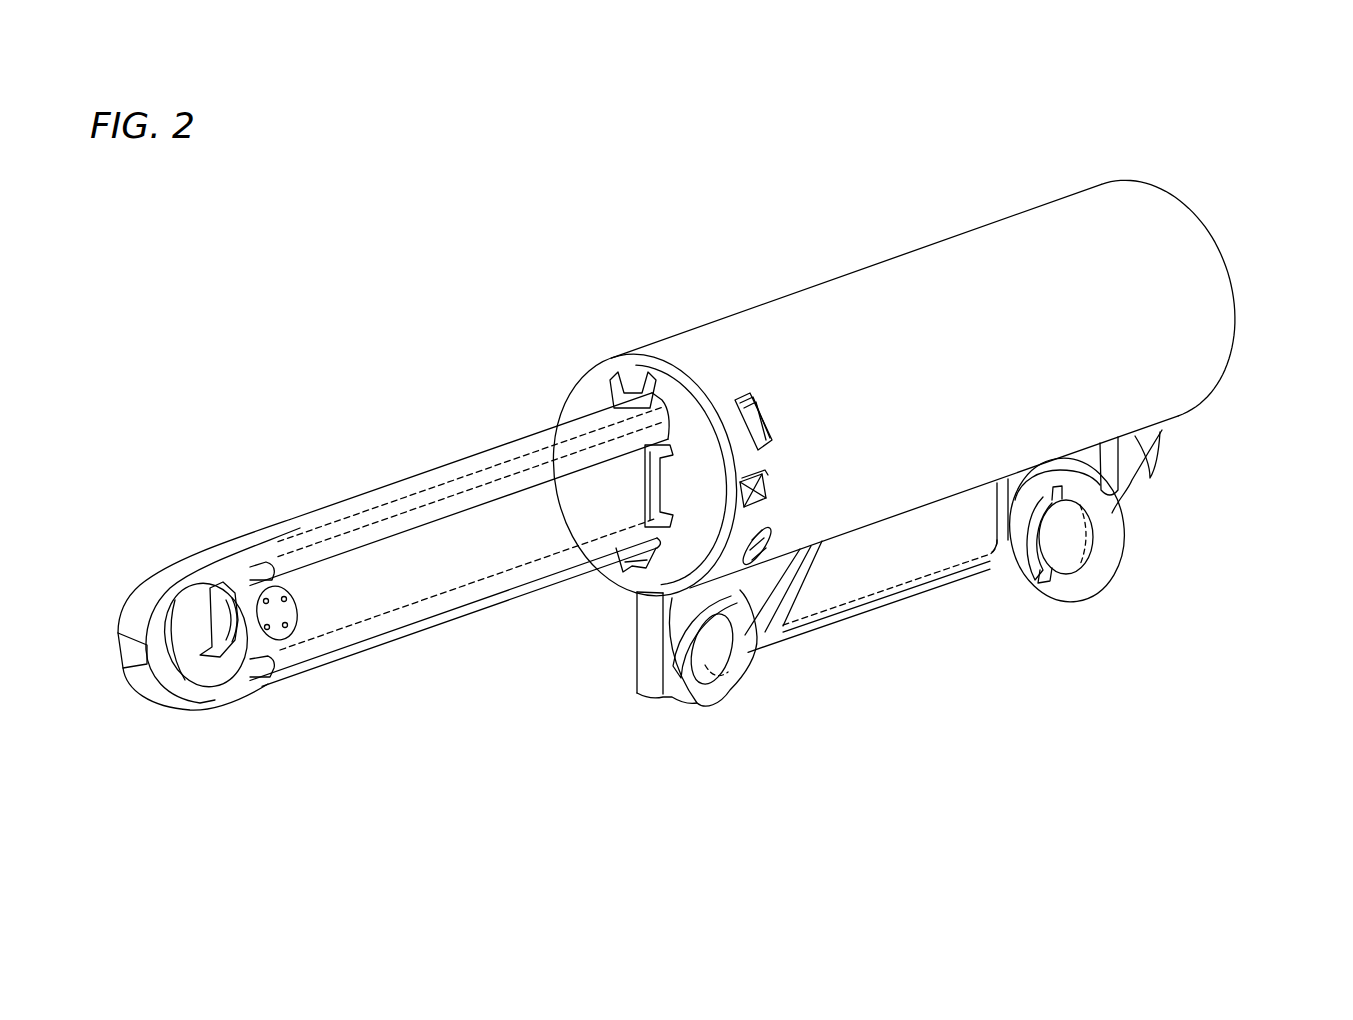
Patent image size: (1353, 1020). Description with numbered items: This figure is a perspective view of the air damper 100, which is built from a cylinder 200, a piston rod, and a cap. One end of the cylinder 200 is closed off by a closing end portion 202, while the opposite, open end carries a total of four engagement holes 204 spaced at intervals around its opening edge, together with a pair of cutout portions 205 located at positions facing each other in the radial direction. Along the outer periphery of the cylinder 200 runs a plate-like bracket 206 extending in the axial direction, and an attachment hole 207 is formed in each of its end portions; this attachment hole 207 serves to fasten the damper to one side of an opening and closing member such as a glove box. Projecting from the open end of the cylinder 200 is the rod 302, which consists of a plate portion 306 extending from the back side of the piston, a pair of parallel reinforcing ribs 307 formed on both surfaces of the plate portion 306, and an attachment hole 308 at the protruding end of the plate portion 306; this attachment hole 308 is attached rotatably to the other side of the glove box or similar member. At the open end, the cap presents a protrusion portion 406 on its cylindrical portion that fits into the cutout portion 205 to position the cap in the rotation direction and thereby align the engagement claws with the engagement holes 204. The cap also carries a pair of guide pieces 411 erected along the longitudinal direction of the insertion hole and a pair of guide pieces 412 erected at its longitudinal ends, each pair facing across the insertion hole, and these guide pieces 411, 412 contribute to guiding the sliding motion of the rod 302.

The air damper 100 is at (686, 206).
The cylinder 200 is at (923, 393).
The closing end portion 202 is at (1200, 282).
The engagement hole 204 is at (769, 407).
The cutout portion 205 is at (762, 471).
The bracket 206 is at (903, 598).
The attachment hole 207 is at (718, 662).
The rod 302 is at (399, 466).
The plate portion 306 is at (418, 580).
The reinforcing rib 307 is at (497, 490).
The attachment hole 308 is at (197, 674).
The protrusion portion 406 is at (770, 490).
The guide piece 411 is at (640, 490).
The guide piece 412 is at (633, 382).